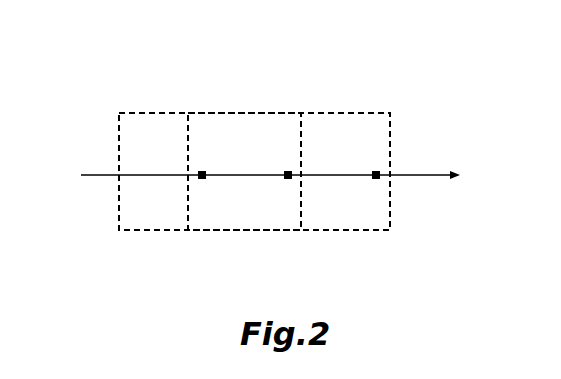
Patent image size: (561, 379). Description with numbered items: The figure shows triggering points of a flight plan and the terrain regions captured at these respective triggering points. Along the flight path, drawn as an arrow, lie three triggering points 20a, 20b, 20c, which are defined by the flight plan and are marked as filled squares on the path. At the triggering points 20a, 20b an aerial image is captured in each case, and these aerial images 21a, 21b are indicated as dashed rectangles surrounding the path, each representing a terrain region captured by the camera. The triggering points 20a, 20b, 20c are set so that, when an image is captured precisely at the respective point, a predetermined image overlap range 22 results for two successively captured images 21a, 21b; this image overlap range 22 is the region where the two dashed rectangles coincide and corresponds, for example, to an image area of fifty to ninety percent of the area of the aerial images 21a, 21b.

The triggering point 20a is at (152, 122).
The triggering point 20b is at (239, 122).
The triggering point 20c is at (327, 122).
The aerial image 21a is at (190, 190).
The aerial image 21b is at (289, 190).
The image overlap range 22 is at (256, 218).